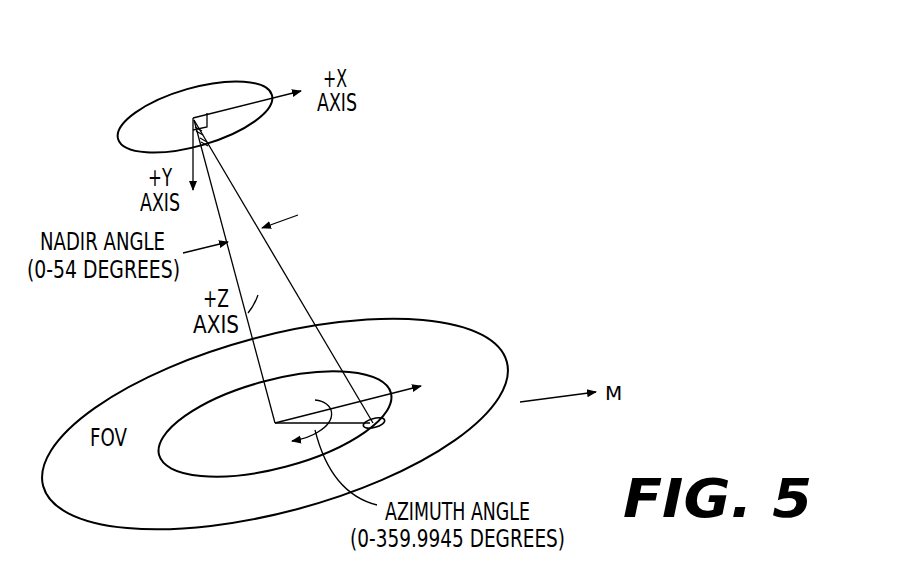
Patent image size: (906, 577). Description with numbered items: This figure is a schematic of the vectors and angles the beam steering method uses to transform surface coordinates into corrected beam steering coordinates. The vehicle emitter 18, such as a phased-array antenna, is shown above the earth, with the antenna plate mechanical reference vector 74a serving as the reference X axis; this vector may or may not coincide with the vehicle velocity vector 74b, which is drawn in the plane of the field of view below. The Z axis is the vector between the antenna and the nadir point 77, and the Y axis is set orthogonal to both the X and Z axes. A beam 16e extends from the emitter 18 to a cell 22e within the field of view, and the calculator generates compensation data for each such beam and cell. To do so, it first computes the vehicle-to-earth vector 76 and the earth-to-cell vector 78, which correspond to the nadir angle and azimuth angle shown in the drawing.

The vehicle emitter 18 is at (193, 118).
The antenna plate mechanical reference vector 74a is at (284, 93).
The vehicle-to-earth vector 76 is at (240, 264).
The beam 16e is at (293, 281).
The nadir point 77 is at (273, 424).
The earth-to-cell vector 78 is at (280, 442).
The vehicle velocity vector 74b is at (408, 385).
The cell 22e is at (385, 422).